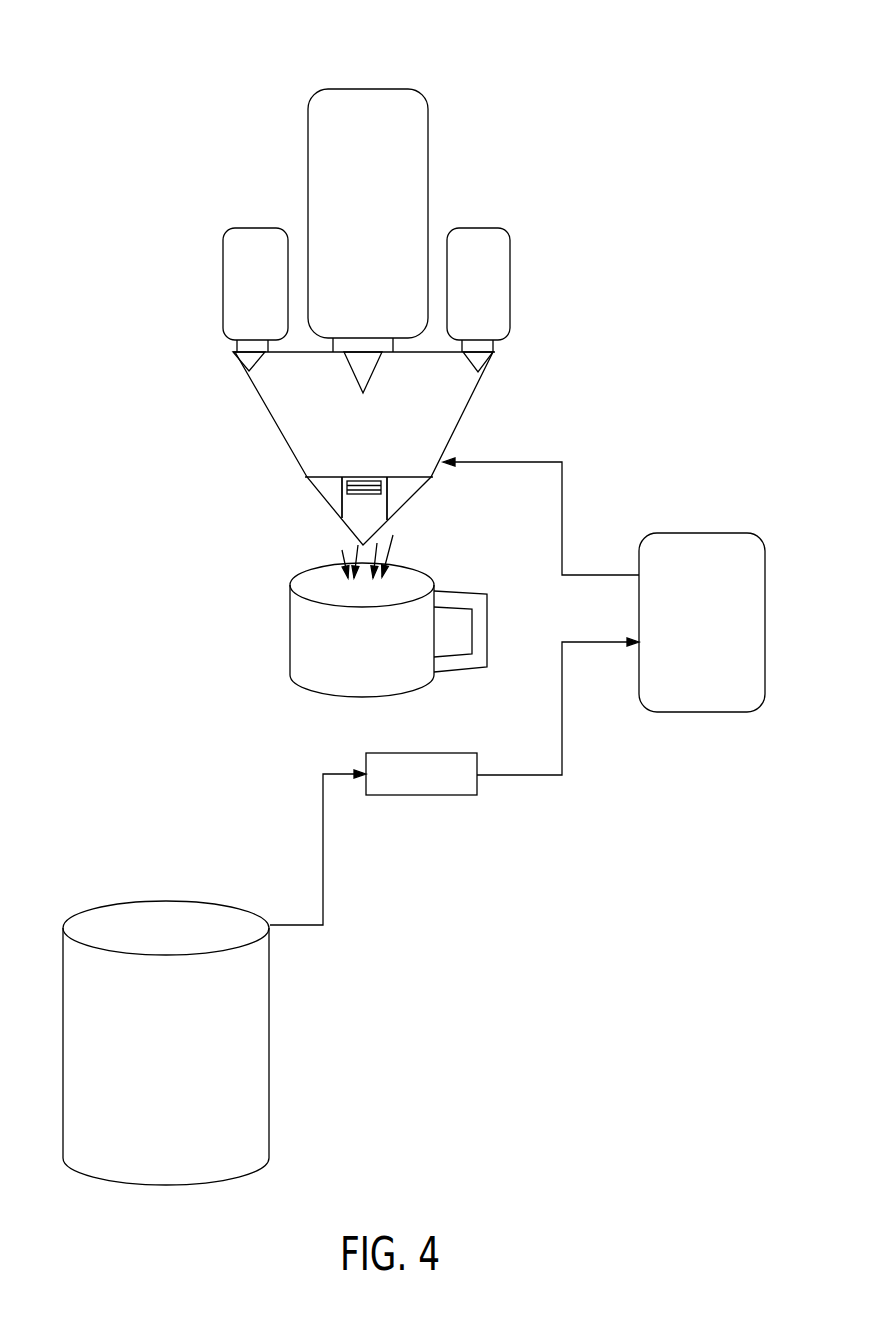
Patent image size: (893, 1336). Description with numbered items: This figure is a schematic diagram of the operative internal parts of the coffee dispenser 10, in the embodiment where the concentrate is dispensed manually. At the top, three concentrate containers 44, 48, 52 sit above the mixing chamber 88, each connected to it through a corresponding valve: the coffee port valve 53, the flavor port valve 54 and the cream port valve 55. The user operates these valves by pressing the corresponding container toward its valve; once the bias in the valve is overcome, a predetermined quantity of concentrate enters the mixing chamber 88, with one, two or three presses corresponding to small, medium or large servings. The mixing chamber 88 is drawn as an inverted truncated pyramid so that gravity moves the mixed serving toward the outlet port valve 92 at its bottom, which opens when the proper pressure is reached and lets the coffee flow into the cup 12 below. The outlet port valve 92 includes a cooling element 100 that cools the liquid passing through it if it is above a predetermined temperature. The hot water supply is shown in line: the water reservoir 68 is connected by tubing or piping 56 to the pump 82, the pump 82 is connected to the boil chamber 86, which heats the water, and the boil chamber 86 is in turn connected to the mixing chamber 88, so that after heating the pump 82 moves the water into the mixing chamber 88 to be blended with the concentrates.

The coffee dispenser 10 is at (130, 135).
The concentrate container 44 is at (427, 153).
The concentrate container 48 is at (224, 270).
The concentrate container 52 is at (510, 268).
The coffee port valve 53 is at (370, 372).
The flavor port valve 54 is at (247, 365).
The cream port valve 55 is at (487, 363).
The mixing chamber 88 is at (312, 430).
The outlet port valve 92 is at (382, 485).
The cooling element 100 is at (345, 490).
The cup 12 is at (307, 655).
The boil chamber 86 is at (717, 698).
The pump 82 is at (438, 787).
The tubing or piping 56 is at (325, 862).
The water reservoir 68 is at (249, 1119).